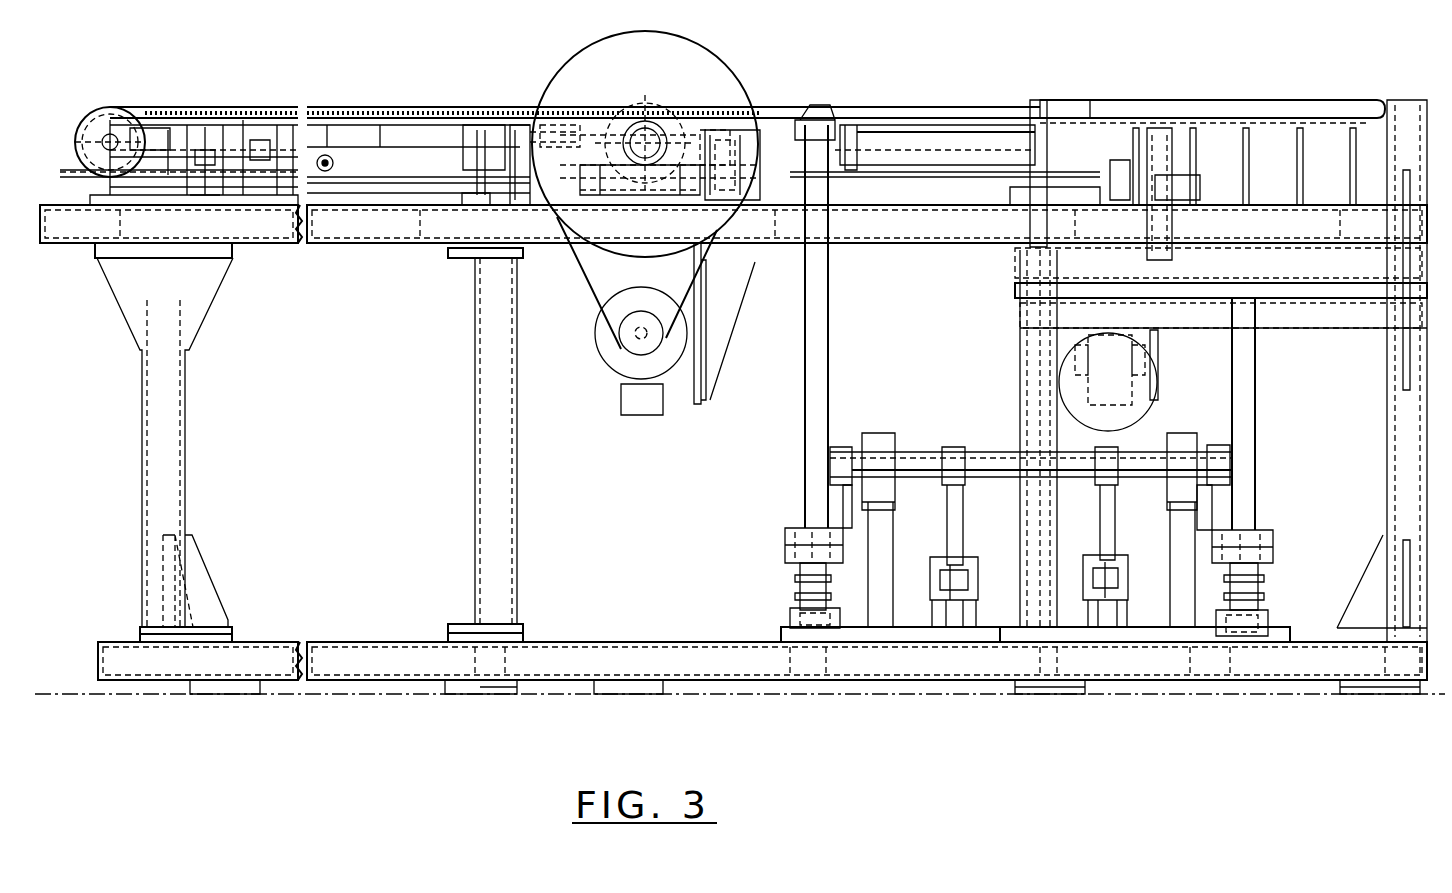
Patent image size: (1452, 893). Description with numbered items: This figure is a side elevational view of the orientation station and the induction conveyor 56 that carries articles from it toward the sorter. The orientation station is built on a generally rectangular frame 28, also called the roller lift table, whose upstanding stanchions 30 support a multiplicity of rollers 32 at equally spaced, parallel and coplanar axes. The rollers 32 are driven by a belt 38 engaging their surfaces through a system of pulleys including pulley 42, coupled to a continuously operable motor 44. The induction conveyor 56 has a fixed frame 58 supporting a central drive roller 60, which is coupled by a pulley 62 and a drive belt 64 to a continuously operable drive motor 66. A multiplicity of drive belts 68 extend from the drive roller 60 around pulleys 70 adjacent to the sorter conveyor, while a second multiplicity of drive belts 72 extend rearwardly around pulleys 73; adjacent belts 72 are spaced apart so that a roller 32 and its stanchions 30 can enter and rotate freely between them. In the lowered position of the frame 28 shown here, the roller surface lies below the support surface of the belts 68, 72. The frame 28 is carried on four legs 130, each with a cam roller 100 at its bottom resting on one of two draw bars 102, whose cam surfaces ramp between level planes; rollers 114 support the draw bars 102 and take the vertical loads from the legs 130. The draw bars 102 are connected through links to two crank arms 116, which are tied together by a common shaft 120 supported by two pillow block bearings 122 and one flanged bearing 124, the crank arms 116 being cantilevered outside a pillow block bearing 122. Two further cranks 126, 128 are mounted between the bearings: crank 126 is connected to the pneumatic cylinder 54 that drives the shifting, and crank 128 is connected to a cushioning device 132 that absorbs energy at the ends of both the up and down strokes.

The frame 28 is at (967, 218).
The stanchions 30 is at (1292, 148).
The rollers 32 is at (890, 132).
The belt 38 is at (1158, 183).
The pulley 42 is at (1155, 140).
The motor 44 is at (1133, 413).
The pneumatic cylinder 54 is at (923, 565).
The induction conveyor 56 is at (410, 126).
The fixed frame 58 is at (258, 230).
The central drive roller 60 is at (645, 123).
The pulley 62 is at (560, 83).
The drive belt 64 is at (738, 73).
The drive motor 66 is at (588, 348).
The drive belts 68 is at (140, 108).
The pulleys 70 is at (113, 112).
The drive belts 72 is at (865, 105).
The pulleys 73 is at (1073, 103).
The cam roller 100 is at (800, 530).
The draw bars 102 is at (793, 572).
The rollers 114 is at (810, 602).
The crank arms 116 is at (820, 496).
The common shaft 120 is at (986, 446).
The pillow block bearings 122 is at (880, 440).
The flanged bearing 124 is at (1043, 445).
The crank 126 is at (952, 513).
The crank 128 is at (1112, 500).
The legs 130 is at (836, 366).
The cushioning device 132 is at (1080, 572).